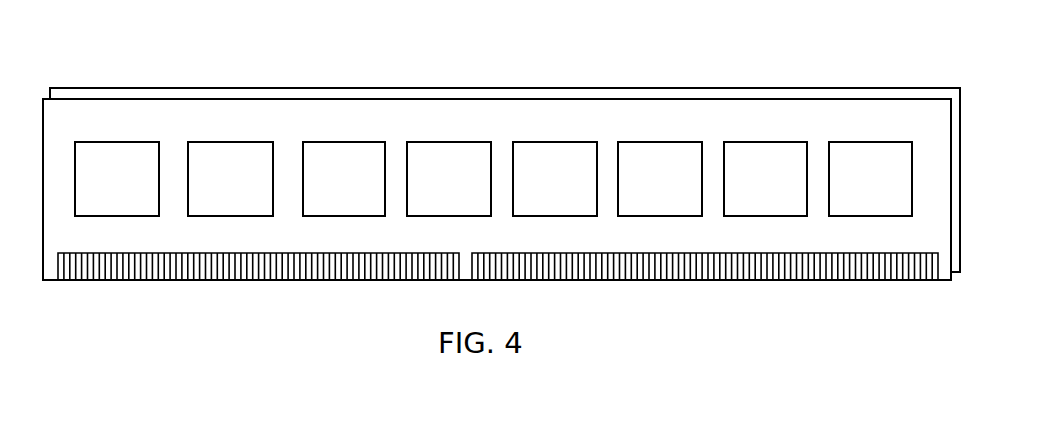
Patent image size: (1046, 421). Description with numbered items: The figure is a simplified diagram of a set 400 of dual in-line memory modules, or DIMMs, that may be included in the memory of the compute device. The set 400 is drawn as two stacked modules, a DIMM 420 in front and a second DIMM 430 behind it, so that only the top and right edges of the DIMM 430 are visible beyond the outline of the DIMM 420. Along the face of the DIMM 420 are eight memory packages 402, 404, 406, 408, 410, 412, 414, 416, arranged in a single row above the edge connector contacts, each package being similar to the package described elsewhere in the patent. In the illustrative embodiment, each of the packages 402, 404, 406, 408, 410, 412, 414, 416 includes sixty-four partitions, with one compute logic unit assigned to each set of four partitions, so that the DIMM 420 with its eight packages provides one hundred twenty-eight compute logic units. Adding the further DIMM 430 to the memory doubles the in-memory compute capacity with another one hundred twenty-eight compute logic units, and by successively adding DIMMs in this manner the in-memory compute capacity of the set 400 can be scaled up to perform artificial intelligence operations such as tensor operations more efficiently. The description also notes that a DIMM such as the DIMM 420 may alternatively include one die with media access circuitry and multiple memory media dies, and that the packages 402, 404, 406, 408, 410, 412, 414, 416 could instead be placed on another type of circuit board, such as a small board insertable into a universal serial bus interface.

The set of dual in-line memory modules 400 is at (501, 151).
The package 402 is at (117, 179).
The package 404 is at (230, 179).
The package 406 is at (344, 179).
The package 408 is at (449, 179).
The package 410 is at (555, 179).
The package 412 is at (660, 179).
The package 414 is at (765, 179).
The package 416 is at (870, 179).
The dual in-line memory module 420 is at (702, 100).
The dual in-line memory module 430 is at (762, 88).